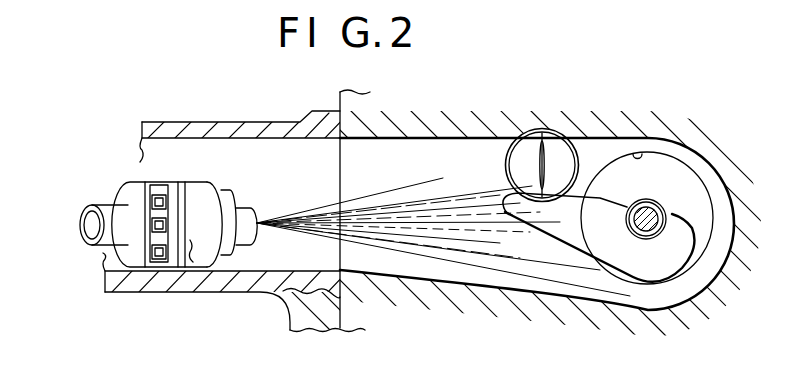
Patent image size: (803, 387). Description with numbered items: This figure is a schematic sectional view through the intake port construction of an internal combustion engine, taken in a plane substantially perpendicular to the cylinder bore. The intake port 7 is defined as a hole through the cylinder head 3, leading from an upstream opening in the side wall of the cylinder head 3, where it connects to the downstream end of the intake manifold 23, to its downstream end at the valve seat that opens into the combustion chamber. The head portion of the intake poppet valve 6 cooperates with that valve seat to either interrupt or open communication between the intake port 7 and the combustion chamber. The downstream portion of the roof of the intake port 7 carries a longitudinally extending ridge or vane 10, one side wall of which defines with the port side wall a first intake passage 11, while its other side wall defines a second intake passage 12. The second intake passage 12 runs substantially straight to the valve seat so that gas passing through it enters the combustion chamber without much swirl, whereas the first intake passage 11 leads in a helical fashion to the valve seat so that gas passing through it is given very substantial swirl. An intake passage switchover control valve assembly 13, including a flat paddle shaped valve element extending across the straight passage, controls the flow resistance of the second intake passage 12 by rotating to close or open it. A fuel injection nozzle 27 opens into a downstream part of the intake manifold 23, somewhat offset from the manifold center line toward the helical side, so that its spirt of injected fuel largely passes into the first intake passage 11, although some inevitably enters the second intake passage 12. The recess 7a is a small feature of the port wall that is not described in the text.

The cylinder head 3 is at (287, 311).
The intake poppet valve 6 is at (652, 209).
The intake port 7 is at (385, 162).
The recess 7a is at (635, 151).
The vane 10 is at (570, 233).
The first intake passage 11 is at (614, 294).
The second intake passage 12 is at (590, 150).
The intake passage switchover control valve assembly 13 is at (536, 163).
The intake manifold 23 is at (287, 127).
The fuel injection nozzle 27 is at (188, 282).